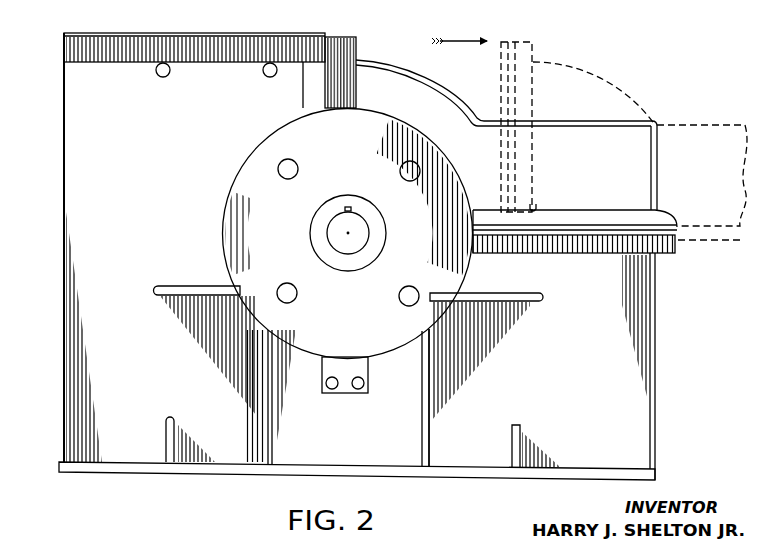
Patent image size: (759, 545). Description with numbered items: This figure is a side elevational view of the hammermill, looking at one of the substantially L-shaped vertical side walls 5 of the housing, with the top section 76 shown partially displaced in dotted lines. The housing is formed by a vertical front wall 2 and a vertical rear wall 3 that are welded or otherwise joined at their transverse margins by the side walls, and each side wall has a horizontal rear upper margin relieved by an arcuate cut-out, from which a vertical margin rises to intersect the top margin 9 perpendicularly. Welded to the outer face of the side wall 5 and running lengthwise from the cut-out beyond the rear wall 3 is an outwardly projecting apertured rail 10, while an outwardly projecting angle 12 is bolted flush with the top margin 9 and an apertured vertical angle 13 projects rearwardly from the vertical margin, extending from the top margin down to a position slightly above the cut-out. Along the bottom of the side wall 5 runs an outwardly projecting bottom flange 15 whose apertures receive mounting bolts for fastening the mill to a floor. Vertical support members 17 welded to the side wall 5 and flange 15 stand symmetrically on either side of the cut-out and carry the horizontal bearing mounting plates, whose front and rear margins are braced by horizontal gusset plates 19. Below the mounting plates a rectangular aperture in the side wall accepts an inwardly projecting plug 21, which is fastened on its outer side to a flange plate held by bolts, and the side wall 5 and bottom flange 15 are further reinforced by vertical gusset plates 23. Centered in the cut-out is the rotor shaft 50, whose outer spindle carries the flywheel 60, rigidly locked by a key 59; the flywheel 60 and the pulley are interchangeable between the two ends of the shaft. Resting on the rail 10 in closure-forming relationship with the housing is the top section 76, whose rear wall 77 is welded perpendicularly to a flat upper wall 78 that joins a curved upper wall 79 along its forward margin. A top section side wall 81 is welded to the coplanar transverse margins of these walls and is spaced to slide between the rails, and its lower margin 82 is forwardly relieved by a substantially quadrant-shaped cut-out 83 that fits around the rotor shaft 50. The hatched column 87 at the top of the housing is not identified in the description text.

The vertical front wall 2 is at (62, 249).
The vertical rear wall 3 is at (656, 386).
The side wall 5 is at (72, 128).
The top margin 9 is at (267, 37).
The rail 10 is at (667, 253).
The outwardly projecting angle 12 is at (63, 45).
The vertical angle 13 is at (302, 97).
The bottom flange 15 is at (210, 477).
The vertical support member 17 is at (422, 397).
The horizontal gusset plate 19 is at (183, 284).
The plug 21 is at (333, 395).
The vertical gusset plate 23 is at (165, 423).
The rotor shaft 50 is at (366, 246).
The key 59 is at (346, 208).
The flywheel 60 is at (228, 193).
The top section 76 is at (659, 121).
The rear wall 77 is at (658, 186).
The flat upper wall 78 is at (556, 123).
The curved upper wall 79 is at (443, 90).
The top section side wall 81 is at (640, 157).
The lower margin 82 is at (539, 207).
The quadrant-shaped cut-out 83 is at (548, 223).
The hatched column 87 is at (357, 48).